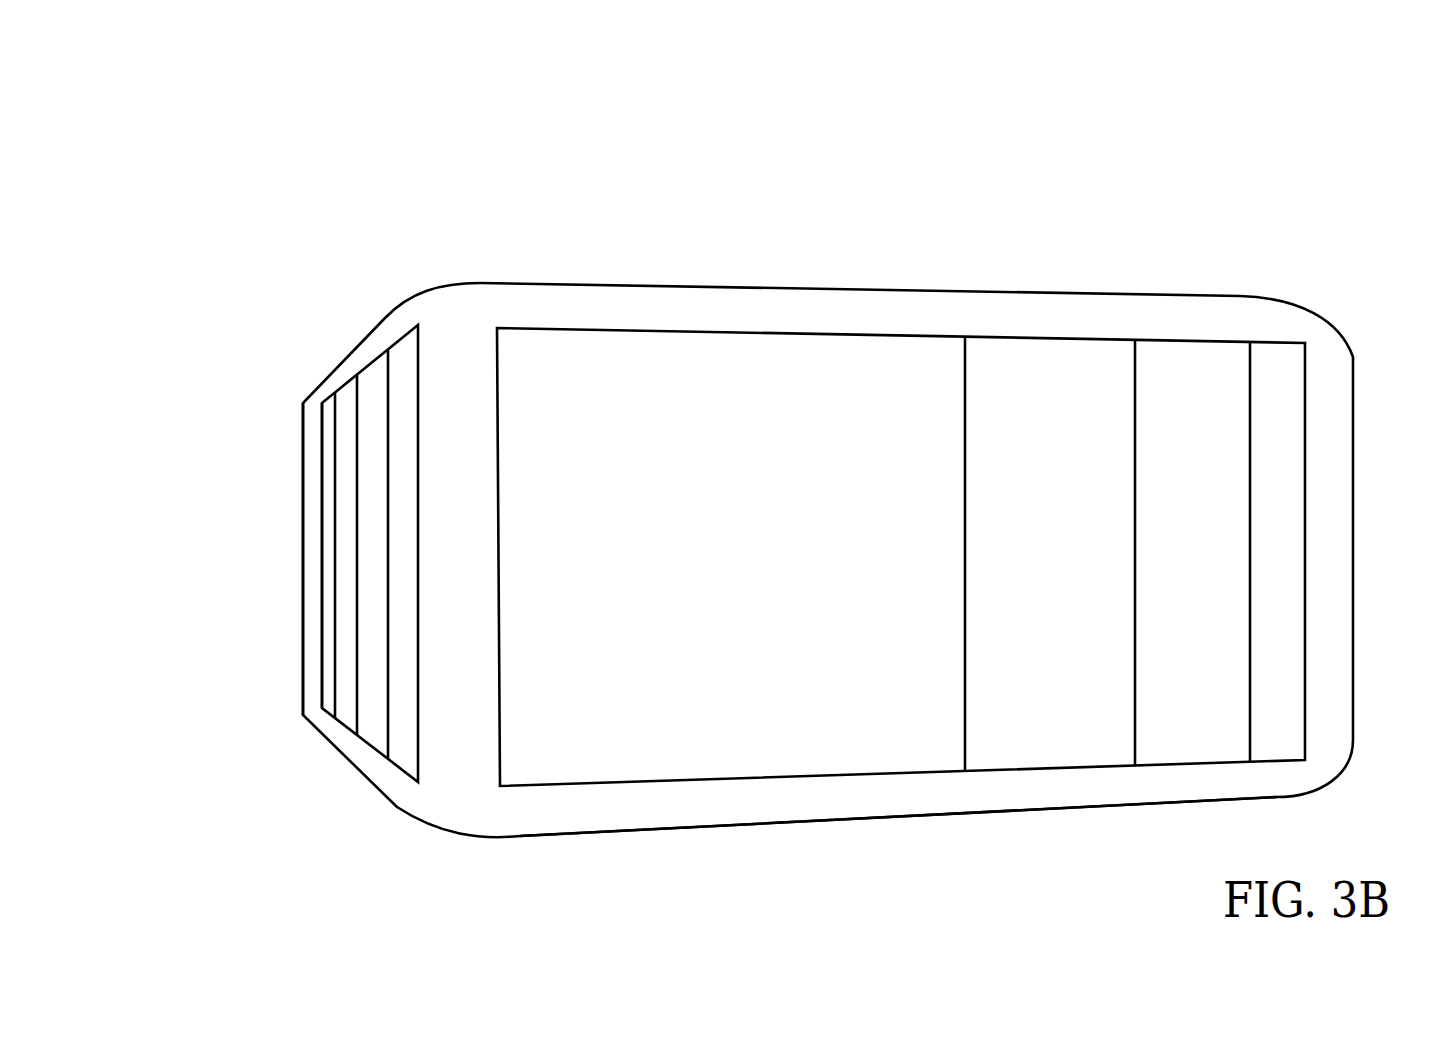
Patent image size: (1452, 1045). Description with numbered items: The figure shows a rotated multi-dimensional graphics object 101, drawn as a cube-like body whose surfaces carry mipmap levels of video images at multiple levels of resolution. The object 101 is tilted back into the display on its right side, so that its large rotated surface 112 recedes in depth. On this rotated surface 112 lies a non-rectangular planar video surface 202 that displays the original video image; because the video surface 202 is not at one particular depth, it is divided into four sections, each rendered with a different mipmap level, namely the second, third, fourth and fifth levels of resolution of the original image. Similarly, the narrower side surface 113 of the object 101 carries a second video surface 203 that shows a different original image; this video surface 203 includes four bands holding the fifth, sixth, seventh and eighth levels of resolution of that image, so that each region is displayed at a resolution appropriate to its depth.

The multi-dimensional graphics object 101 is at (522, 283).
The rotated surface 112 is at (905, 793).
The surface 113 is at (360, 753).
The video surface 202 is at (750, 782).
The video surface 203 is at (390, 803).